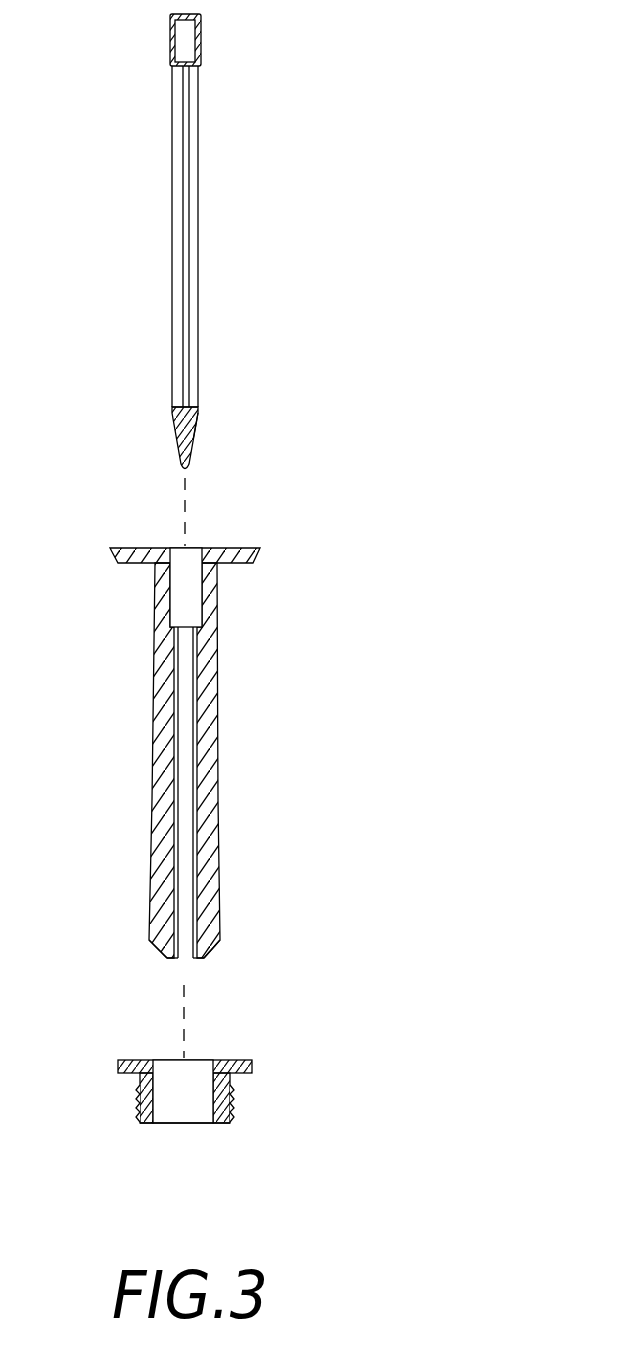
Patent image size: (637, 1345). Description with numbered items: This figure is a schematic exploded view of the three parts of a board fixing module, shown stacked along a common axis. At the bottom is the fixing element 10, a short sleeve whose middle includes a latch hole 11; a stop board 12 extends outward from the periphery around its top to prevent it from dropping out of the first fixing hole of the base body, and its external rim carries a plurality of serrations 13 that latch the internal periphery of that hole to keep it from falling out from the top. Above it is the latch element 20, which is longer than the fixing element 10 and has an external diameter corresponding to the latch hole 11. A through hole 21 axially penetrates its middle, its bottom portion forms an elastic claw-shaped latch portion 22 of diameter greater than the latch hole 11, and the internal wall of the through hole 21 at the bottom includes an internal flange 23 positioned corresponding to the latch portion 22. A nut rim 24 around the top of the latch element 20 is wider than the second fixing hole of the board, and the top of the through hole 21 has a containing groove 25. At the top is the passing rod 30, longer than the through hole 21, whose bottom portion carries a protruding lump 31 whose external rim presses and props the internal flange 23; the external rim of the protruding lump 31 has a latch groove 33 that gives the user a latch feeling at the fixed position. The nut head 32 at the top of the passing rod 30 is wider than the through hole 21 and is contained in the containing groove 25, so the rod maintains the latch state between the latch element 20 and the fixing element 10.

The fixing element 10 is at (264, 1061).
The latch hole 11 is at (213, 1125).
The stop board 12 is at (130, 1060).
The serrations 13 is at (137, 1105).
The latch element 20 is at (232, 711).
The through hole 21 is at (183, 740).
The latch portion 22 is at (152, 932).
The internal flange 23 is at (192, 959).
The nut rim 24 is at (117, 553).
The containing groove 25 is at (202, 597).
The passing rod 30 is at (146, 191).
The protruding lump 31 is at (173, 424).
The nut head 32 is at (202, 31).
The latch groove 33 is at (199, 418).